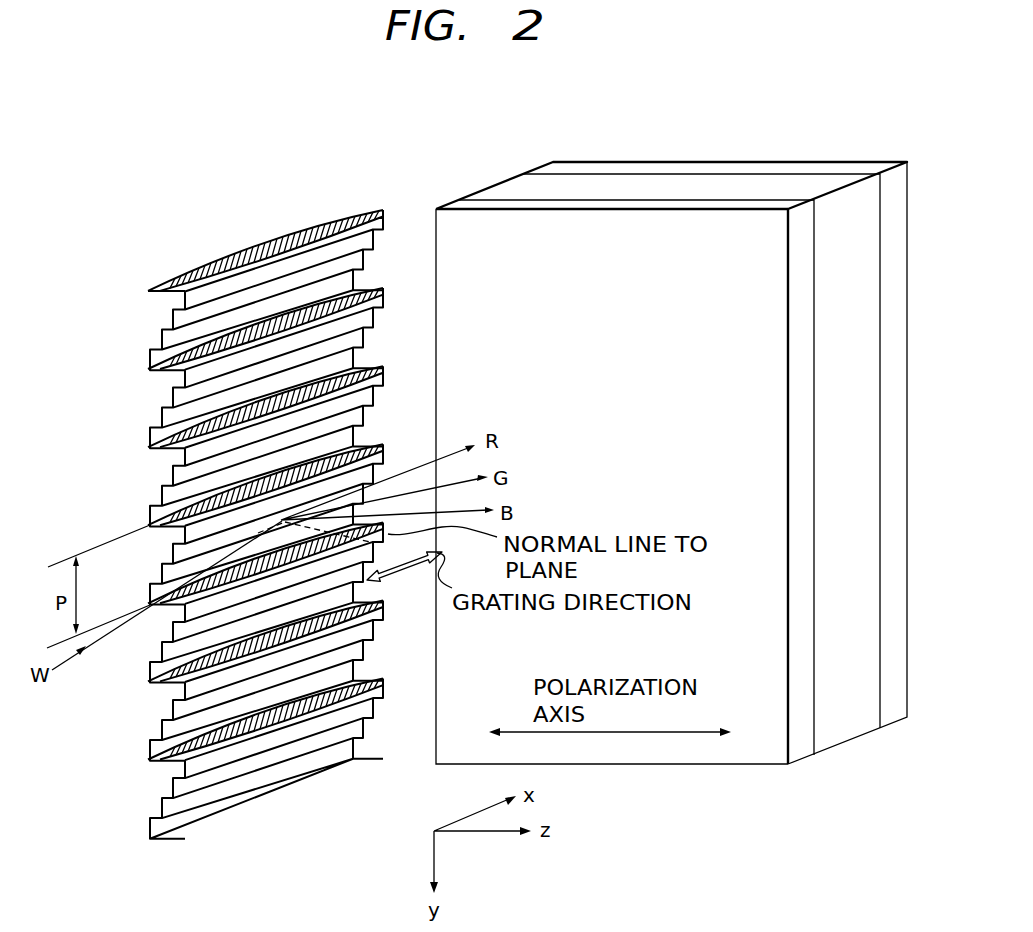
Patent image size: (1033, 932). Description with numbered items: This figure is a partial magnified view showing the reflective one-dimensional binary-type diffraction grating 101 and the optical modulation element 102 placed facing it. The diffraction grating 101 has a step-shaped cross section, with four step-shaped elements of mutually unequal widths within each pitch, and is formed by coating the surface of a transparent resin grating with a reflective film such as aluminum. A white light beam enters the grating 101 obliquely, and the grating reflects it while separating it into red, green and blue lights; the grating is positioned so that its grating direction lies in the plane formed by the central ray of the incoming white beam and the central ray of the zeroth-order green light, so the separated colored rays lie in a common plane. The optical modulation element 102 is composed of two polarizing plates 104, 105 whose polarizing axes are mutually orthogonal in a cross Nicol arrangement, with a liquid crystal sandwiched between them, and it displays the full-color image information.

The reflective one-dimensional binary-type diffraction grating 101 is at (318, 224).
The optical modulation element 102 is at (537, 143).
The polarizing plate 104 is at (681, 203).
The polarizing plate 105 is at (752, 166).